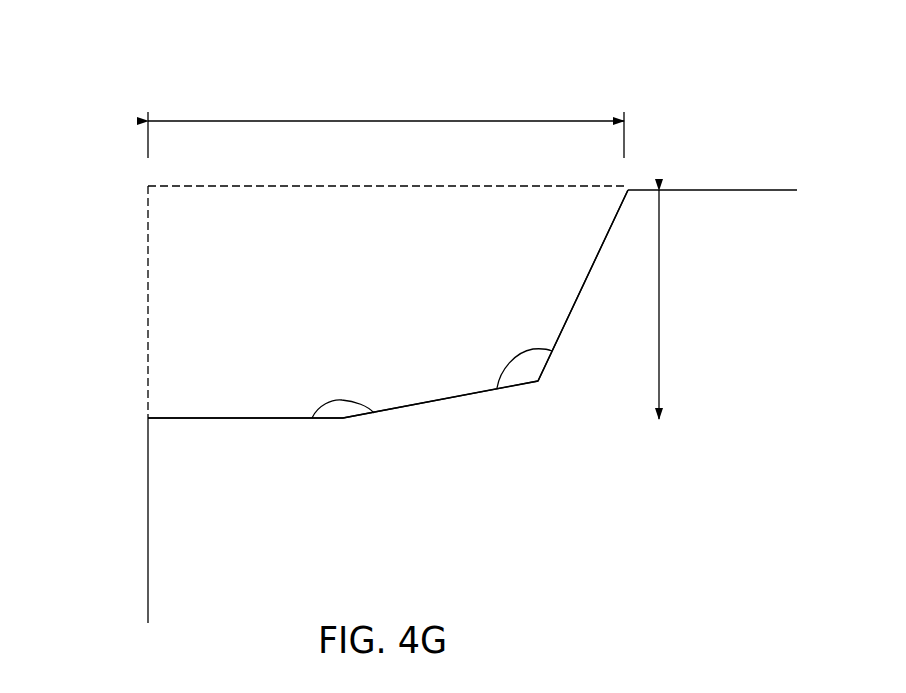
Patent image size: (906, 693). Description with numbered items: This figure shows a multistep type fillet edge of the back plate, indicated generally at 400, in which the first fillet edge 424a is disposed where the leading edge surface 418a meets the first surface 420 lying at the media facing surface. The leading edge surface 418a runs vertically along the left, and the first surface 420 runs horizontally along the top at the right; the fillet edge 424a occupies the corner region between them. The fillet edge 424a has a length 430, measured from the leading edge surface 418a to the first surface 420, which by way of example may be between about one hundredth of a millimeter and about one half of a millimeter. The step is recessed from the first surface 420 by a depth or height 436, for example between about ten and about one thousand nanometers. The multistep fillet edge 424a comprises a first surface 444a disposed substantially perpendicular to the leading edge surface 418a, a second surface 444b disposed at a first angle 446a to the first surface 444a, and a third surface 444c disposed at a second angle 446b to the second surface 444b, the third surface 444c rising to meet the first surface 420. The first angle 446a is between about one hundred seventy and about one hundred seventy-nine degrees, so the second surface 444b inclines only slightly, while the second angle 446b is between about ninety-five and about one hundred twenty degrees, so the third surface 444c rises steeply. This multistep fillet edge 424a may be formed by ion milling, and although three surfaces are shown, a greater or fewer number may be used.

The assembly 400 is at (128, 57).
The leading edge surface 418a is at (148, 516).
The first surface 420 is at (725, 189).
The first fillet edge 424a is at (312, 279).
The length 430 is at (358, 120).
The depth or height 436 is at (660, 298).
The first surface 444a is at (247, 419).
The second surface 444b is at (442, 400).
The third surface 444c is at (594, 258).
The first angle 446a is at (341, 400).
The second angle 446b is at (518, 352).